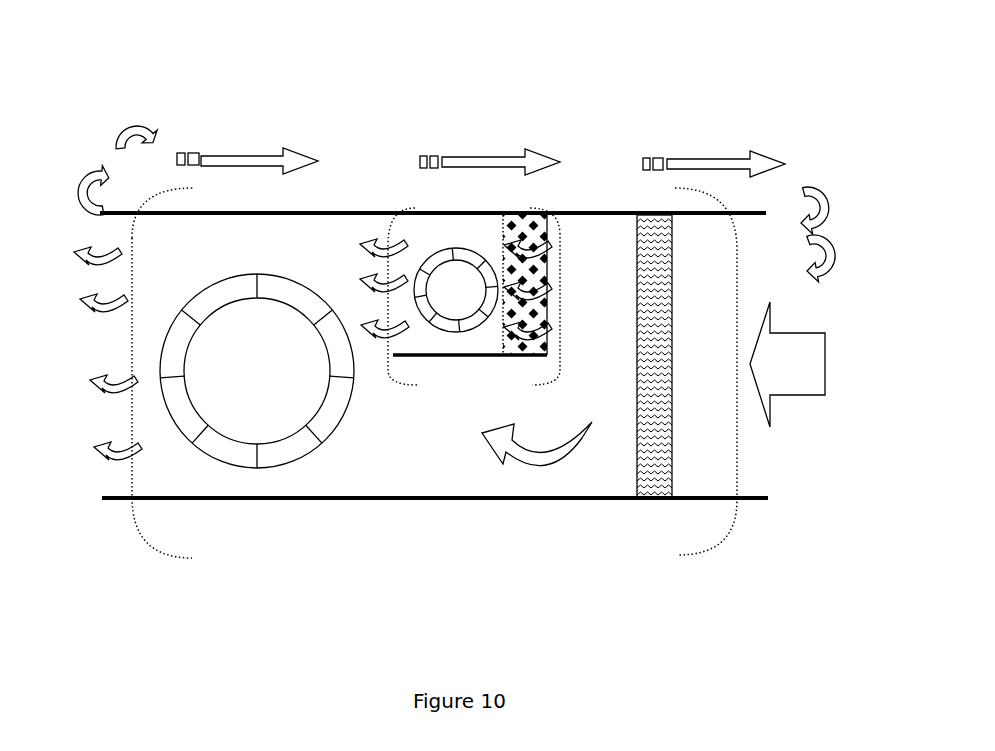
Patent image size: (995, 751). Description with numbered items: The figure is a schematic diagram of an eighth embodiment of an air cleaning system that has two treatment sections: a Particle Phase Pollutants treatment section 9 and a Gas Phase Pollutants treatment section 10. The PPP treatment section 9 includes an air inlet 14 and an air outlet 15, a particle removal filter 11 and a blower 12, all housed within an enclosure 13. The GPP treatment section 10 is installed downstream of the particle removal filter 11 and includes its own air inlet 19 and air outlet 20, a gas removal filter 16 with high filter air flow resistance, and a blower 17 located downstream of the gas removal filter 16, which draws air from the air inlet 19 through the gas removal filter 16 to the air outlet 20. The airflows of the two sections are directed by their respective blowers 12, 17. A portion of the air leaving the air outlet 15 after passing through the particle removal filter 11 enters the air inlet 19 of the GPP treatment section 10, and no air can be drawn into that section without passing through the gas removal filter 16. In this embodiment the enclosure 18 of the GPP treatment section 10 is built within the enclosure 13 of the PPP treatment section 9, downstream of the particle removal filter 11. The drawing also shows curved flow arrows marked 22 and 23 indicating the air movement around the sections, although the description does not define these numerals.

The Particle Phase Pollutants treatment section 9 is at (737, 472).
The Gas Phase Pollutants treatment section 10 is at (400, 213).
The particle removal filter 11 is at (648, 215).
The blower 12 is at (258, 469).
The enclosure 13 is at (662, 500).
The air inlet 14 is at (797, 420).
The air outlet 15 is at (537, 355).
The gas removal filter 16 is at (456, 290).
The blower 17 is at (422, 354).
The enclosure 18 is at (368, 139).
The air inlet 19 is at (572, 288).
The air outlet 20 is at (400, 285).
The exhaust air flow 22 is at (118, 318).
The air outlet 23 is at (687, 163).